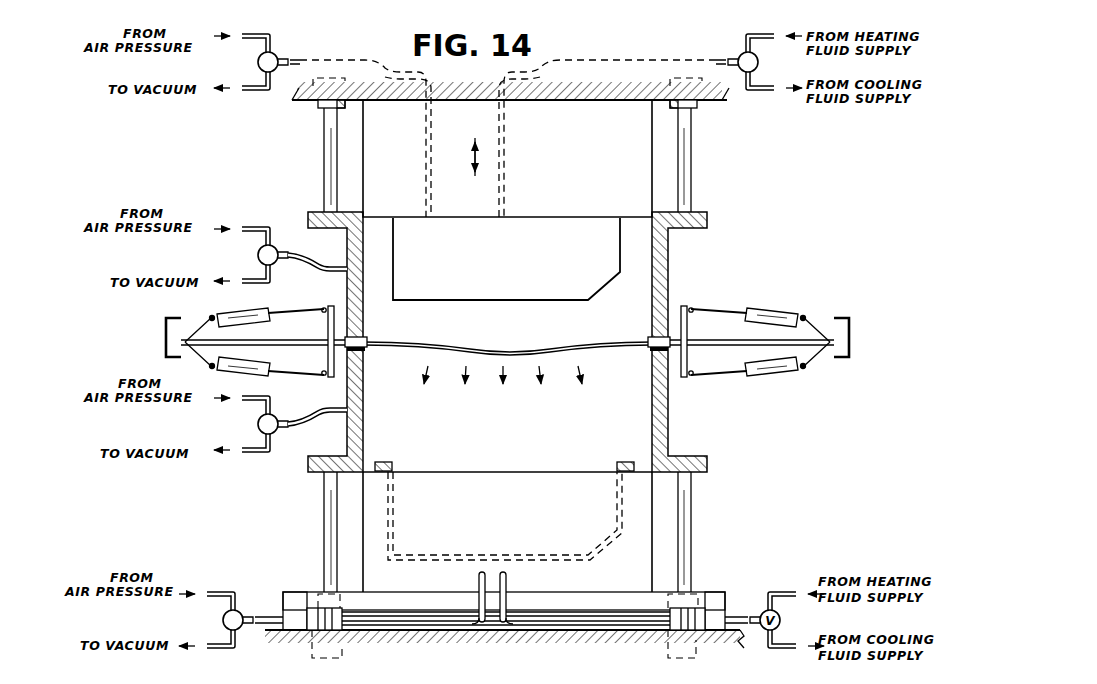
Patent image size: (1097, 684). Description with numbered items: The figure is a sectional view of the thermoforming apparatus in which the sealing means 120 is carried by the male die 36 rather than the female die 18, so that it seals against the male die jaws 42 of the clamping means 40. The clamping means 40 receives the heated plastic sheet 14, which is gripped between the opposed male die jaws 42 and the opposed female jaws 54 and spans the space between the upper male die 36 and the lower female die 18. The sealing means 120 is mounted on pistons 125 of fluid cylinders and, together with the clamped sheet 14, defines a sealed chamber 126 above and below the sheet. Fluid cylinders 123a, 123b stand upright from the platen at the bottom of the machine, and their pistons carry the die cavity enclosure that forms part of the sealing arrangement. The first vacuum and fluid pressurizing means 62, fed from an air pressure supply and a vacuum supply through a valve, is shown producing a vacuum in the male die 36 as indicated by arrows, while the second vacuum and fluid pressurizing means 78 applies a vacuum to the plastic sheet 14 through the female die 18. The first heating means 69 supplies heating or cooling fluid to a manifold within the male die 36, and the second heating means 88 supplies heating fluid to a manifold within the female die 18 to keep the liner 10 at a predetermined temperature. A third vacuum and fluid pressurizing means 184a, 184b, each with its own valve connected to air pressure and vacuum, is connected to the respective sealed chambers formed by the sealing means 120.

The liner 10 is at (396, 486).
The plastic sheet 14 is at (521, 350).
The female die 18 is at (514, 520).
The male die 36 is at (524, 263).
The clamping means 40 is at (204, 309).
The male die jaws 42 is at (366, 340).
The female jaws 54 is at (366, 352).
The first vacuum and fluid pressurizing means 62 is at (307, 60).
The first heating means 69 is at (652, 60).
The second vacuum and fluid pressurizing means 78 is at (252, 591).
The second heating means 88 is at (516, 592).
The sealing means 120 is at (665, 276).
The fluid cylinder 123a is at (344, 660).
The fluid cylinder 123b is at (668, 660).
The pistons 125 is at (327, 150).
The sealed chamber 126 is at (318, 105).
The third vacuum and fluid pressurizing means 184a is at (278, 232).
The third vacuum and fluid pressurizing means 184b is at (288, 452).